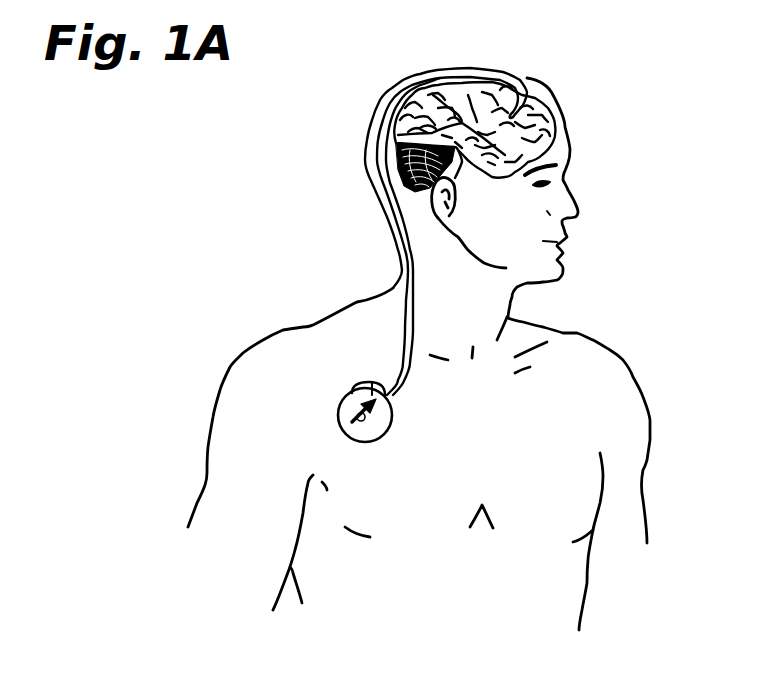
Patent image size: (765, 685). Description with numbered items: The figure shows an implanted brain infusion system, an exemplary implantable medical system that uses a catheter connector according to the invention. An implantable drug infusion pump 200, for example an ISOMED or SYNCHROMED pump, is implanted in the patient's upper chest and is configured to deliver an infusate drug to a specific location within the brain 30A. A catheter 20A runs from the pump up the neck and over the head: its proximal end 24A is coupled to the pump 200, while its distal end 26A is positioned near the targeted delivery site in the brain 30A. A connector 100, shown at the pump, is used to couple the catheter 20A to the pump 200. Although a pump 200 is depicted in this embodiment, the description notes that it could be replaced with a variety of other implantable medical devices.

The catheter 20A is at (403, 290).
The proximal end 24A is at (390, 383).
The distal end 26A is at (528, 115).
The brain 30A is at (557, 148).
The connector 100 is at (357, 413).
The implantable drug infusion pump 200 is at (318, 380).